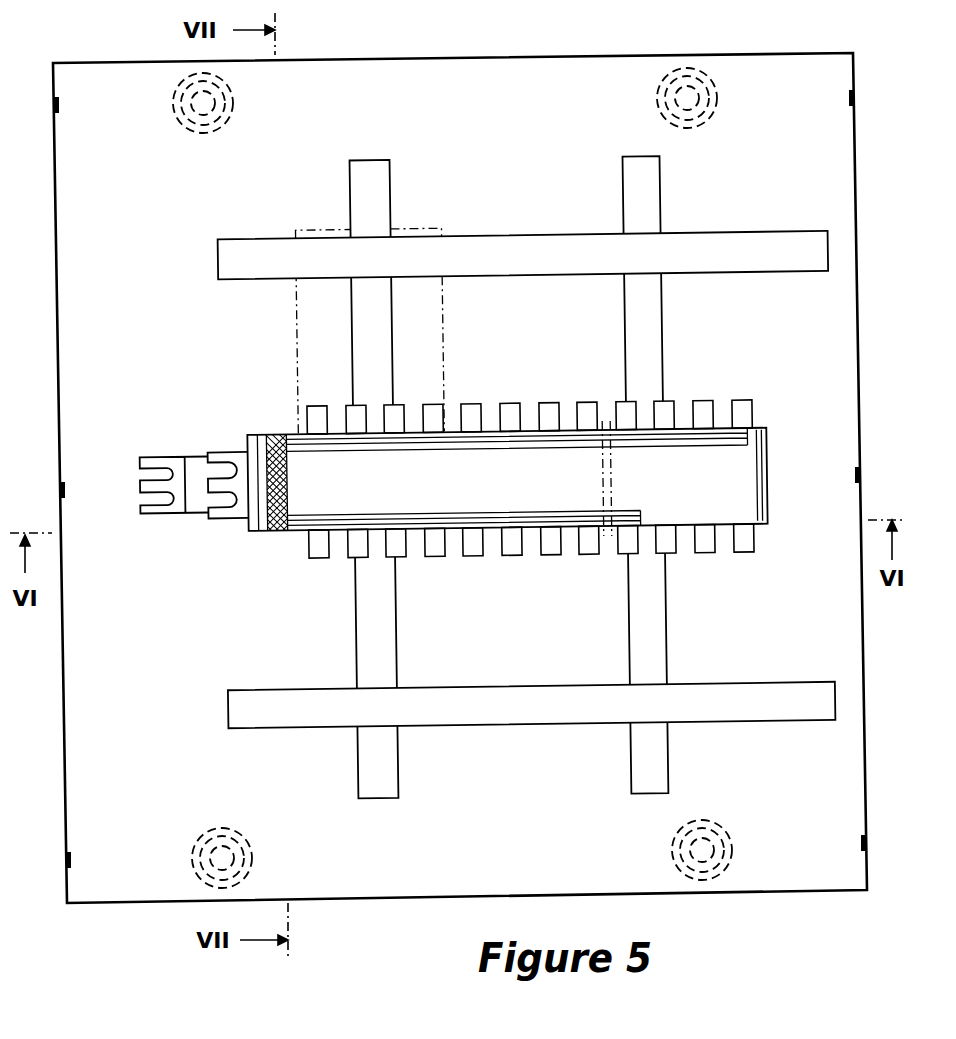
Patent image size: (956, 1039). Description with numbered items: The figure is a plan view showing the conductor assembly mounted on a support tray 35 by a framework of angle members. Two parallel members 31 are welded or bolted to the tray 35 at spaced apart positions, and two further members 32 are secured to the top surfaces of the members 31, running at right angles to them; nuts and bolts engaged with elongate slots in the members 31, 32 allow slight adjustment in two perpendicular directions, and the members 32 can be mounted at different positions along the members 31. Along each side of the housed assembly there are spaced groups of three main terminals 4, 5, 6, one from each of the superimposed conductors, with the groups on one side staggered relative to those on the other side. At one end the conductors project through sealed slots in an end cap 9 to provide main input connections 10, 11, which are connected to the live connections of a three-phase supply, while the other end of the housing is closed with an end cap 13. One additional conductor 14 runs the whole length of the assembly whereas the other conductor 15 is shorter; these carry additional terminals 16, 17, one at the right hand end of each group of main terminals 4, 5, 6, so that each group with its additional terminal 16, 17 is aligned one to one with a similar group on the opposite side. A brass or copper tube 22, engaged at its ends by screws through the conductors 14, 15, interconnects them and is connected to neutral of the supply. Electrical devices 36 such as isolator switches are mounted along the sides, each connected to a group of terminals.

The terminal 4 is at (317, 405).
The terminal 5 is at (352, 405).
The terminal 6 is at (394, 405).
The end cap 9 is at (256, 442).
The main input connection 10 is at (237, 510).
The main input connection 11 is at (198, 500).
The end cap 13 is at (759, 495).
The conductor 14 is at (446, 454).
The conductor 15 is at (331, 512).
The additional terminal 16 is at (432, 405).
The additional terminal 17 is at (317, 558).
The tube 22 is at (606, 482).
The parallel member 31 is at (400, 772).
The further member 32 is at (503, 245).
The tray 35 is at (113, 887).
The electrical device 36 is at (297, 340).